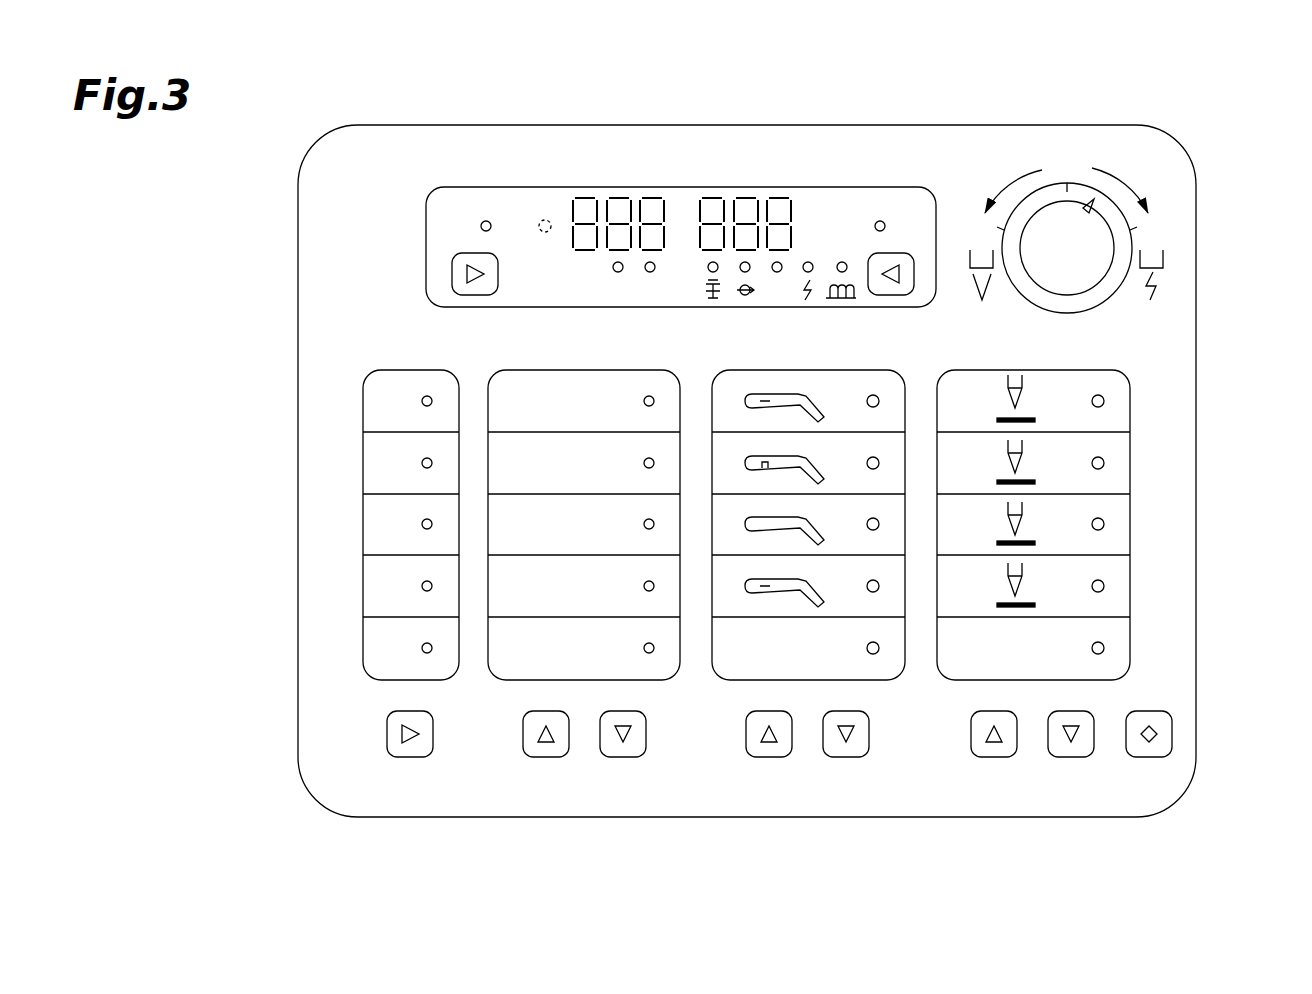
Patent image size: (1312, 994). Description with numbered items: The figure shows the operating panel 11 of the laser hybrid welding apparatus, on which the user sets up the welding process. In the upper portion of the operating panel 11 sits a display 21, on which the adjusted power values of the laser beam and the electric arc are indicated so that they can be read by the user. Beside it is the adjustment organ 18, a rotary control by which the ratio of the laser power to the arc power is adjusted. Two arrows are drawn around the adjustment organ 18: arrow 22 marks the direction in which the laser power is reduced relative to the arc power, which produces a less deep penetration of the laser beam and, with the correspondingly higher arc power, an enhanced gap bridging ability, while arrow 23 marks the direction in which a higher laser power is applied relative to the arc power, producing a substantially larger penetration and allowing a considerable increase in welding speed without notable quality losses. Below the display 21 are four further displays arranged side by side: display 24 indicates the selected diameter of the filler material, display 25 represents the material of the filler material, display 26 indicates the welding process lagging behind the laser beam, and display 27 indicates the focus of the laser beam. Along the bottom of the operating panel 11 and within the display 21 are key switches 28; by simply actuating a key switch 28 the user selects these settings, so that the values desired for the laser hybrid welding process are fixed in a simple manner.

The operating panel 11 is at (233, 383).
The adjustment organ 18 is at (1097, 293).
The display 21 is at (508, 207).
The arrow 22 is at (1120, 182).
The arrow 23 is at (1033, 172).
The display 24 is at (338, 563).
The display 25 is at (495, 697).
The display 26 is at (768, 740).
The display 27 is at (1143, 588).
The key switch 28 is at (405, 755).